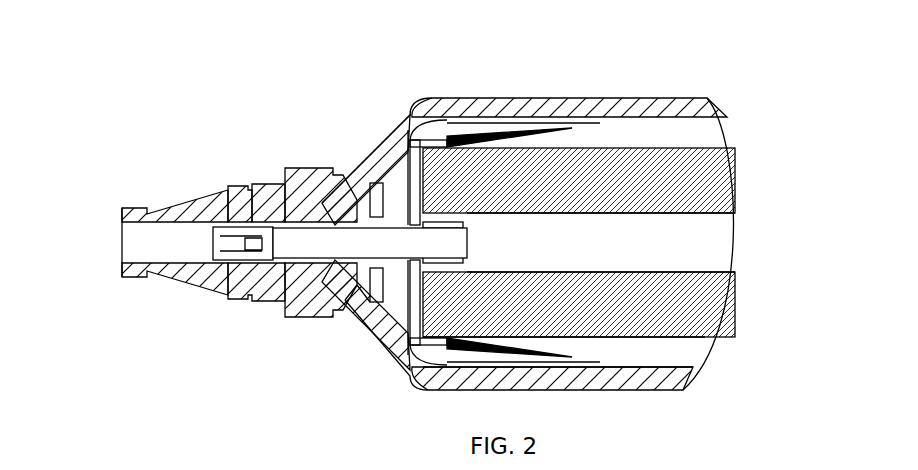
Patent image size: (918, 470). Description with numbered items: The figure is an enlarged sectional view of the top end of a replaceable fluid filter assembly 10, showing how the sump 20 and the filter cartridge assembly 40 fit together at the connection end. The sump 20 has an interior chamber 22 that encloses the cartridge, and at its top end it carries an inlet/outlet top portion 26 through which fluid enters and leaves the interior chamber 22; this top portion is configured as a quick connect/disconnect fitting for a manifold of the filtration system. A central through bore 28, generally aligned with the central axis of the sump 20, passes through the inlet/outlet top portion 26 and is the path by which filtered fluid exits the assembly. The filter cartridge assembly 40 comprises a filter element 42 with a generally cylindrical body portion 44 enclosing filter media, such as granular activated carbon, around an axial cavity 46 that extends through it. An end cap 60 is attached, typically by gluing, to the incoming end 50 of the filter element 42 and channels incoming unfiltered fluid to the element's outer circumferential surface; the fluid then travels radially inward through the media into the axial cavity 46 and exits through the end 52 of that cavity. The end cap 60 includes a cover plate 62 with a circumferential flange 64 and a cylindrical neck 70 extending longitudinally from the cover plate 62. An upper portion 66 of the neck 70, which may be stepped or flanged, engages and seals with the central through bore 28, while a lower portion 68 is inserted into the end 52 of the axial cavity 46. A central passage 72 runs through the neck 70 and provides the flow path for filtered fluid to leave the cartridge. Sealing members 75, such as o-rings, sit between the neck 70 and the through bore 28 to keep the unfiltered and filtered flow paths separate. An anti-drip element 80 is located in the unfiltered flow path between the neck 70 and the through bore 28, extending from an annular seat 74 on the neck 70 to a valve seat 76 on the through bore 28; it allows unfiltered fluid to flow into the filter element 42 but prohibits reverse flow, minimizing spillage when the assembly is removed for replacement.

The fluid filter assembly 10 is at (326, 70).
The sump 20 is at (562, 388).
The interior chamber 22 is at (665, 130).
The inlet/outlet top portion 26 is at (190, 282).
The central through bore 28 is at (132, 252).
The filter cartridge assembly 40 is at (658, 342).
The filter element 42 is at (616, 338).
The body portion 44 is at (725, 166).
The axial cavity 46 is at (675, 245).
The incoming end 50 is at (585, 158).
The end of axial cavity 52 is at (483, 218).
The end cap 60 is at (390, 188).
The cover plate 62 is at (405, 150).
The circumferential flange 64 is at (445, 105).
The upper portion of neck 66 is at (252, 275).
The lower portion of neck 68 is at (463, 266).
The cylindrical neck 70 is at (252, 210).
The central passage 72 is at (262, 231).
The annular seat 74 is at (335, 195).
The sealing members 75 is at (268, 215).
The valve seat 76 is at (362, 306).
The anti-drip element 80 is at (392, 288).